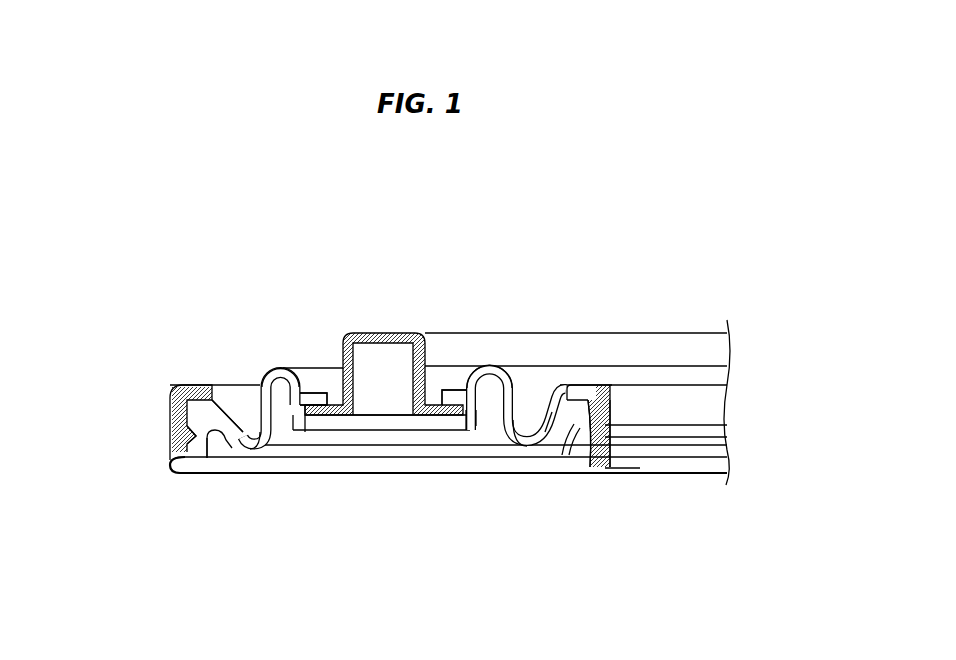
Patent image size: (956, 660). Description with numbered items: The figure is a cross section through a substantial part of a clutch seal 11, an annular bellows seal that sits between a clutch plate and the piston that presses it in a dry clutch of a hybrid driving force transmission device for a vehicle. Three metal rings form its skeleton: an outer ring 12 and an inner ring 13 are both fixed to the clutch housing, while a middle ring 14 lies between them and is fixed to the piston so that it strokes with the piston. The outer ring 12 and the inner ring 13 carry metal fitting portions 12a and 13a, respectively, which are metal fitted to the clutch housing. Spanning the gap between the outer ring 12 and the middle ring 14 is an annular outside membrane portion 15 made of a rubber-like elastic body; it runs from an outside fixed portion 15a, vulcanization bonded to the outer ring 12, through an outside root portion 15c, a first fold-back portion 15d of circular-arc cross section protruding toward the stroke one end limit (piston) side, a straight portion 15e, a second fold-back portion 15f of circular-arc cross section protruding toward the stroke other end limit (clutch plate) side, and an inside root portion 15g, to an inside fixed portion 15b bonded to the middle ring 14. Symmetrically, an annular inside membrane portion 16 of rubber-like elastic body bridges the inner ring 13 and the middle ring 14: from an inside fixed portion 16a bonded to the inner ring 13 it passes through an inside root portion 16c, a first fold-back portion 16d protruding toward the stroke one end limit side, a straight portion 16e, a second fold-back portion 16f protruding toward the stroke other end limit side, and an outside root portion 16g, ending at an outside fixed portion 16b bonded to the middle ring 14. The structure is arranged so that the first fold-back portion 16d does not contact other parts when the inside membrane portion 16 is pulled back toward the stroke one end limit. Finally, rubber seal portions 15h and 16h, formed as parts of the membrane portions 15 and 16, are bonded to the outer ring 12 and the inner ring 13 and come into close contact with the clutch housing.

The clutch seal 11 is at (207, 344).
The outer ring 12 is at (188, 383).
The metal fitting portion 12a is at (169, 410).
The inner ring 13 is at (593, 382).
The metal fitting portion 13a is at (611, 406).
The middle ring 14 is at (386, 332).
The outside membrane portion 15 is at (260, 380).
The outside fixed portion 15a is at (202, 455).
The inside fixed portion 15b is at (315, 431).
The outside root portion 15c is at (220, 432).
The first fold-back portion 15d is at (249, 447).
The straight portion 15e is at (232, 428).
The second fold-back portion 15f is at (283, 369).
The inside root portion 15g is at (313, 393).
The rubber seal portion 15h is at (170, 461).
The inside membrane portion 16 is at (510, 371).
The inside fixed portion 16a is at (576, 452).
The outside fixed portion 16b is at (466, 433).
The inside root portion 16c is at (553, 430).
The first fold-back portion 16d is at (523, 447).
The straight portion 16e is at (492, 438).
The second fold-back portion 16f is at (488, 368).
The outside root portion 16g is at (464, 368).
The rubber seal portion 16h is at (622, 469).